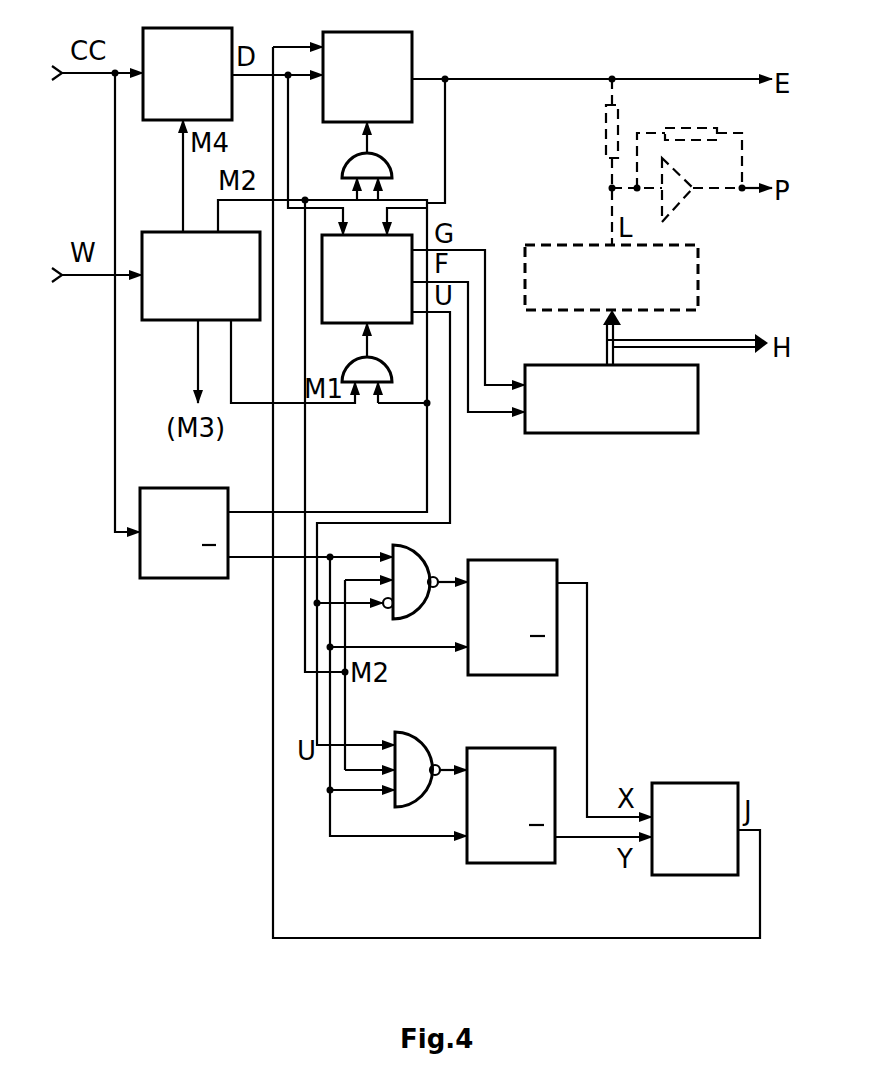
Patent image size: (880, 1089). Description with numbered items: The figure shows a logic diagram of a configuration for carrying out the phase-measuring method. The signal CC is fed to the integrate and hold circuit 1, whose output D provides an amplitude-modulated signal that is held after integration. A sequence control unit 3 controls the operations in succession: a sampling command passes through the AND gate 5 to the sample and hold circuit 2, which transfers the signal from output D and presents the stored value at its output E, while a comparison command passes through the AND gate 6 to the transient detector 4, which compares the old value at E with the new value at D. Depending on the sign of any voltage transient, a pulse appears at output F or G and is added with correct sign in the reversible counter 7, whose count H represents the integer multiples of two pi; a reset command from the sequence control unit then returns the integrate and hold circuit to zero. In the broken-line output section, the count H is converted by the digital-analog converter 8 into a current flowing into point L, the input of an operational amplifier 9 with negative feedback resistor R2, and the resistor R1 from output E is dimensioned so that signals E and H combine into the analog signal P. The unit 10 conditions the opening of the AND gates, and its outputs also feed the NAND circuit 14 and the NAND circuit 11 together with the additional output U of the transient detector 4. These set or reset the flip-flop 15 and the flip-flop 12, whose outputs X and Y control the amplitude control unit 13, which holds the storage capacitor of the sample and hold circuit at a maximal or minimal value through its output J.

The integrate and hold circuit 1 is at (187, 74).
The sample and hold circuit 2 is at (367, 77).
The sequence control unit 3 is at (201, 276).
The transient detector 4 is at (367, 279).
The AND gate 5 is at (380, 170).
The AND gate 6 is at (378, 372).
The reversible counter 7 is at (611, 399).
The digital-analog converter 8 is at (611, 277).
The operational amplifier 9 is at (677, 190).
The unit controlling conditional initiation 10 is at (184, 533).
The NAND circuit 11 is at (407, 744).
The flip-flop 12 is at (511, 805).
The amplitude control unit 13 is at (695, 829).
The NAND circuit 14 is at (408, 563).
The flip-flop 15 is at (512, 617).
The resistor R1 is at (593, 118).
The negative feedback resistor R2 is at (691, 118).